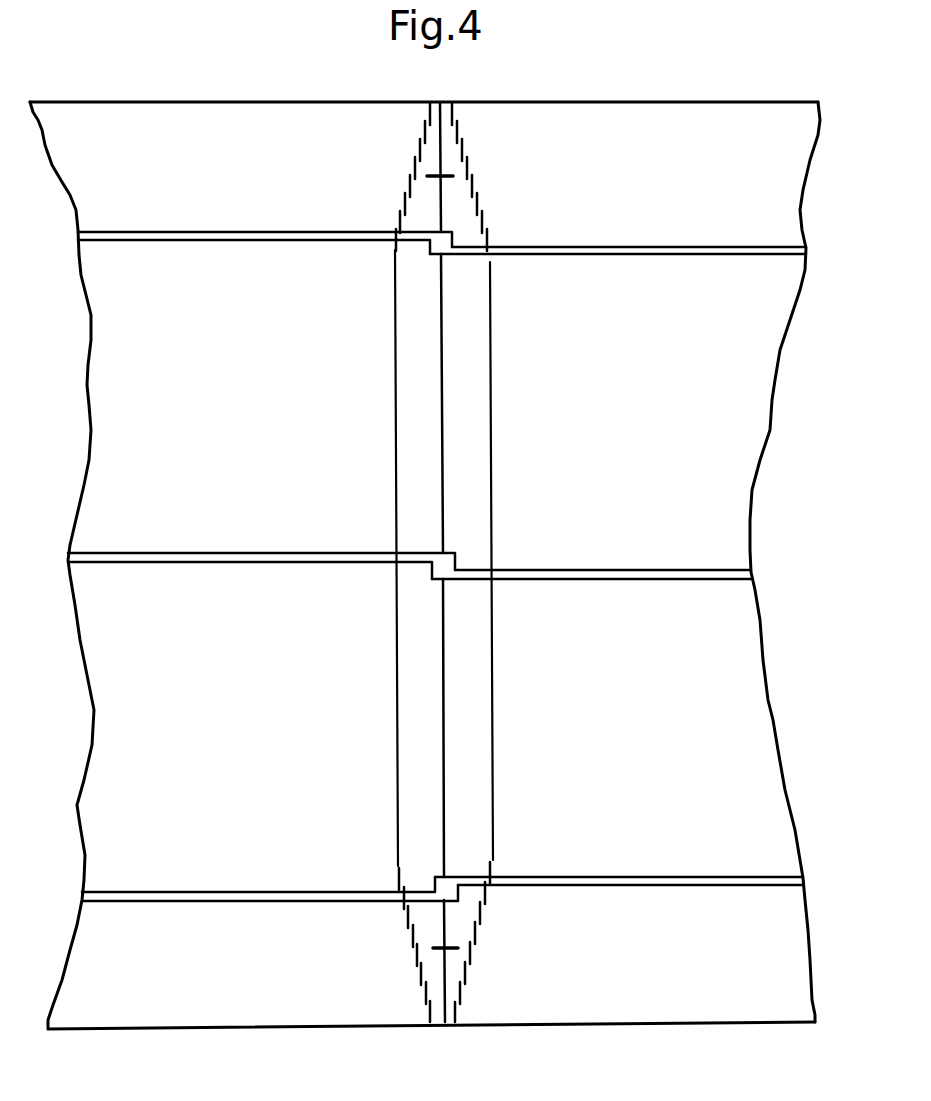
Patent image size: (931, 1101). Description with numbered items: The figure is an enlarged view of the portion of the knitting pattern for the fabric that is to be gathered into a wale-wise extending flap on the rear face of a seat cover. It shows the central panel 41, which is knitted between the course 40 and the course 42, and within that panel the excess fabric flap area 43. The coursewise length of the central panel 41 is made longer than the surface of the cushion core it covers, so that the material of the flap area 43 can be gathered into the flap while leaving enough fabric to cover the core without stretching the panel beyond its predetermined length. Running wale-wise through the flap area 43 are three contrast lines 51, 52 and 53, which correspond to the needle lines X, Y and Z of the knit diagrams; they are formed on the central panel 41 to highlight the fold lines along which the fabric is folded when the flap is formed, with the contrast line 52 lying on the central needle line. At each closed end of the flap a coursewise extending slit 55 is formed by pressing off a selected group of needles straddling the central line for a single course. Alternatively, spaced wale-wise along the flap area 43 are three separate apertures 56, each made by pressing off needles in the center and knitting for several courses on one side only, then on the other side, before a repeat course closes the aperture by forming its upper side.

The course 40 is at (812, 958).
The central panel 41 is at (746, 714).
The course 42 is at (777, 97).
The excess fabric flap area 43 is at (475, 488).
The contrast line 51 is at (395, 704).
The contrast line 52 is at (443, 740).
The contrast line 53 is at (497, 733).
The coursewise extending slit 55 is at (447, 178).
The aperture 56 is at (437, 246).